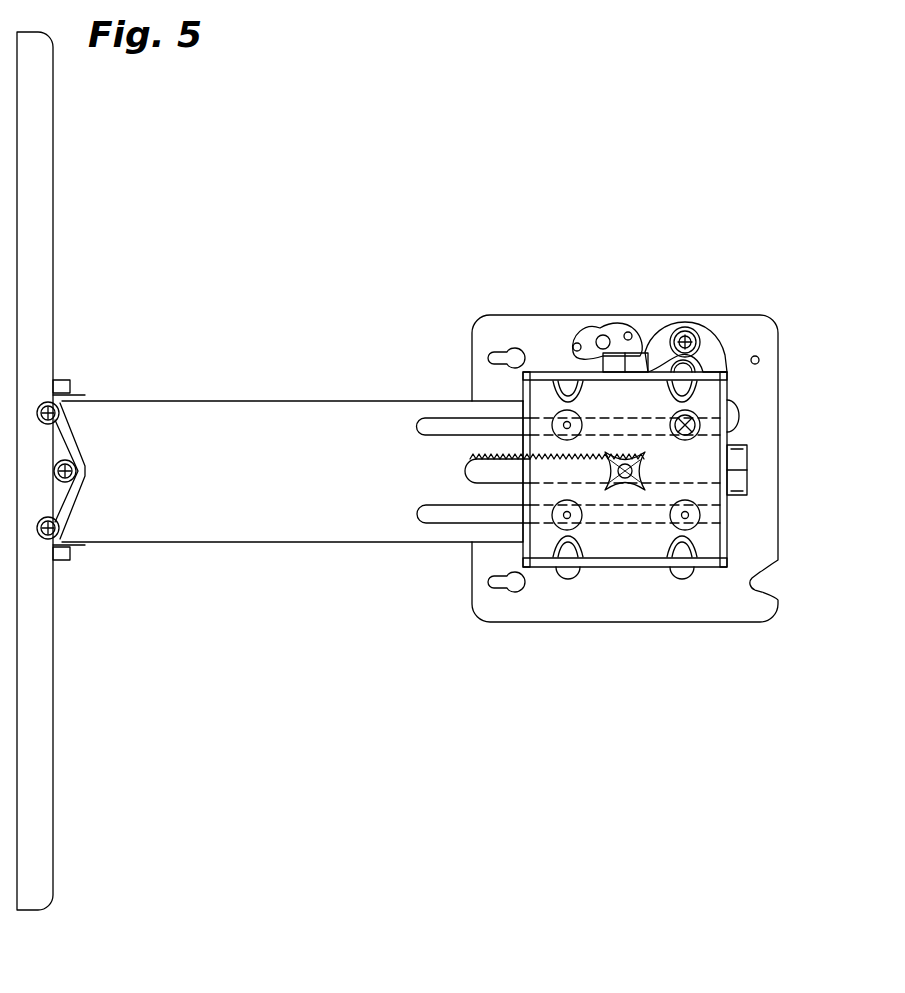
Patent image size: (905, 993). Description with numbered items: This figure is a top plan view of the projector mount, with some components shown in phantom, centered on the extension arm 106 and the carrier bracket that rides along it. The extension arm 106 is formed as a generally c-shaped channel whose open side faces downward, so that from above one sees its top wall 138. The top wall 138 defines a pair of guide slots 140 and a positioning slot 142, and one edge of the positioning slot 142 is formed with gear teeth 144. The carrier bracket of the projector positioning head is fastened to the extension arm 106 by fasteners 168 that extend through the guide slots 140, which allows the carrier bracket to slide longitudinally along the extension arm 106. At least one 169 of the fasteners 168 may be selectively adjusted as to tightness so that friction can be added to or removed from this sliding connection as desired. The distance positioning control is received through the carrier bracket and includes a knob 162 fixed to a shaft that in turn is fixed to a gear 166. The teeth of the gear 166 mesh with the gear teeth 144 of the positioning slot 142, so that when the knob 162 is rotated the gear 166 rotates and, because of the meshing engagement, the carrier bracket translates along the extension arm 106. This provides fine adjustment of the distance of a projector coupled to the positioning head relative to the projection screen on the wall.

The extension arm 106 is at (251, 413).
The top wall 138 is at (294, 491).
The guide slots 140 is at (433, 421).
The positioning slot 142 is at (487, 460).
The gear teeth 144 is at (512, 460).
The knob 162 is at (648, 482).
The gear 166 is at (635, 490).
The fasteners 168 is at (557, 414).
The selectively adjustable fastener 169 is at (697, 418).